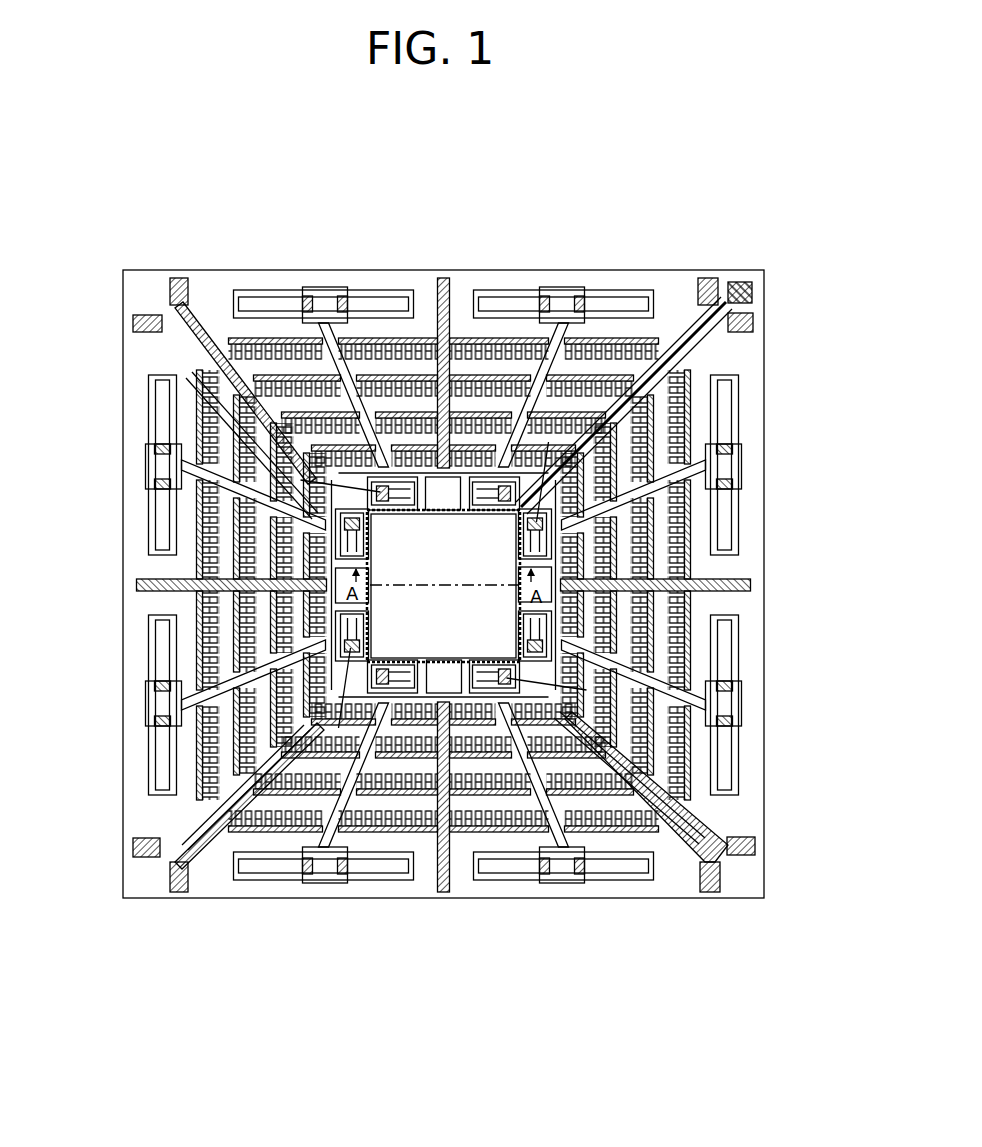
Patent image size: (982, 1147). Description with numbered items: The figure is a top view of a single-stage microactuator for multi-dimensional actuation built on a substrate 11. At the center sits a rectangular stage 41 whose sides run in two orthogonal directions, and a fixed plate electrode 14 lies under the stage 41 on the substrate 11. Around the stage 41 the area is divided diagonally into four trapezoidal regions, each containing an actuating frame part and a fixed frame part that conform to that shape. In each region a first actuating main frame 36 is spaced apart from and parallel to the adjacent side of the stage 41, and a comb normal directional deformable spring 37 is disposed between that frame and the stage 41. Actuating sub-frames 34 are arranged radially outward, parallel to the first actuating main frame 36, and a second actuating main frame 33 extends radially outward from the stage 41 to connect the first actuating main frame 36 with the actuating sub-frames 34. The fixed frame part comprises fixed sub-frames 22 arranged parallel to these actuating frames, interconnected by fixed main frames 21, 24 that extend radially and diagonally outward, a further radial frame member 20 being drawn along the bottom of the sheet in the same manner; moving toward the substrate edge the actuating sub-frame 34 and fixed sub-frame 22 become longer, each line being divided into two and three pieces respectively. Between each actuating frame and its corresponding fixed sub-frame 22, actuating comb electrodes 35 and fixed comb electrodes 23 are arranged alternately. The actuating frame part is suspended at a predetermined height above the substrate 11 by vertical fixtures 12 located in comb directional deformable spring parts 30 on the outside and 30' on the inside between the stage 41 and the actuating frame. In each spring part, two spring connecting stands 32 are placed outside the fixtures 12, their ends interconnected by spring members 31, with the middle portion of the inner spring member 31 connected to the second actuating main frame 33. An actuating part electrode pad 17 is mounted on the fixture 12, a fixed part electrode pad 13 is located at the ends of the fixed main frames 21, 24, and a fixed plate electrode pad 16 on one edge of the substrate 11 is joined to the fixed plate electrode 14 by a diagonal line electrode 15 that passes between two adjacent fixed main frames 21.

The substrate 11 is at (748, 358).
The vertical fixture 12 is at (508, 445).
The fixed part electrode pad 13 is at (754, 323).
The fixed plate electrode 14 is at (372, 628).
The line electrode 15 is at (724, 300).
The fixed plate electrode pad 16 is at (753, 291).
The actuating part electrode pad 17 is at (735, 684).
The common bus line 20 is at (458, 866).
The fixed main frame 21 is at (172, 342).
The fixed sub-frame 22 is at (192, 373).
The fixed comb electrode 23 is at (660, 830).
The fixed main frame 24 is at (135, 598).
The comb directional deformable spring part 30 is at (473, 593).
The comb directional deformable spring part 30' is at (438, 527).
The spring member 31 is at (742, 523).
The spring connecting stand 32 is at (737, 555).
The second actuating main frame 33 is at (728, 486).
The actuating sub-frame 34 is at (705, 700).
The actuating comb electrode 35 is at (693, 813).
The first actuating main frame 36 is at (550, 604).
The comb normal directional deformable spring 37 is at (366, 594).
The stage 41 is at (460, 574).